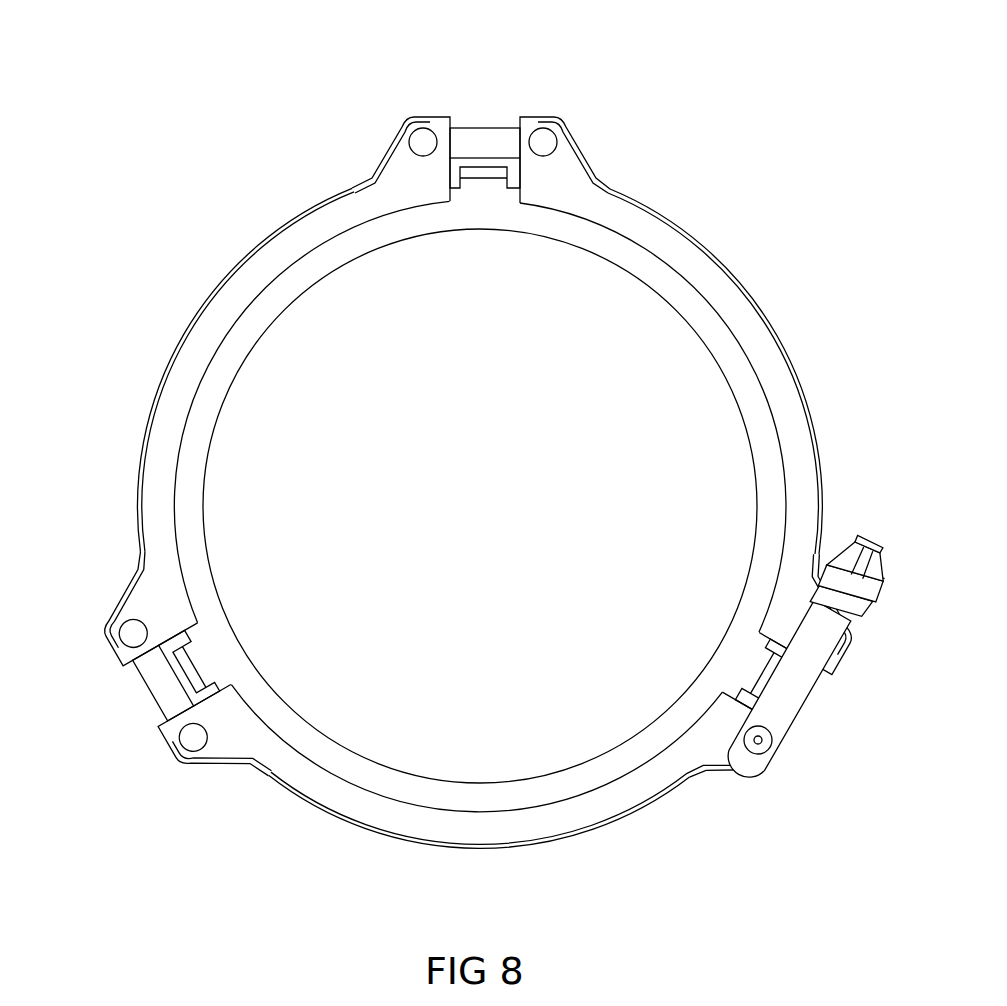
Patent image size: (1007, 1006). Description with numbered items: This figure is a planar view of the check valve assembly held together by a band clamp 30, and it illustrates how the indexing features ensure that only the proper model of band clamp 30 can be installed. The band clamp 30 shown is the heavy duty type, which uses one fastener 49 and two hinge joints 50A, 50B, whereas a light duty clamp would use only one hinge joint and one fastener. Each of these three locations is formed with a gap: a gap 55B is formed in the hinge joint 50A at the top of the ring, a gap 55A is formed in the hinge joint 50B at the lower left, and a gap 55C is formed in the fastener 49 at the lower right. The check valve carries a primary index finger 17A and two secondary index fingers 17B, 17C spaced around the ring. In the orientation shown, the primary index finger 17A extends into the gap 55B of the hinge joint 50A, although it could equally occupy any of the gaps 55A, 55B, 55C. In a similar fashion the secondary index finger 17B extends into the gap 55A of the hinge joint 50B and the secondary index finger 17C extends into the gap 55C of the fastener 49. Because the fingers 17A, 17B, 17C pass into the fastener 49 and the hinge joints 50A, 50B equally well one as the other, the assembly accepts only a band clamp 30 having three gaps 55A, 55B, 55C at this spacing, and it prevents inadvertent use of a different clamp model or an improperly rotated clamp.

The hinge joint 50A is at (459, 98).
The gap 55B is at (472, 165).
The primary index finger 17A is at (488, 172).
The gap 55A is at (178, 680).
The secondary index finger 17B is at (183, 681).
The hinge joint 50B is at (152, 718).
The gap 55C is at (782, 684).
The secondary index finger 17C is at (767, 682).
The fastener 49 is at (797, 683).
The band clamp 30 is at (808, 724).